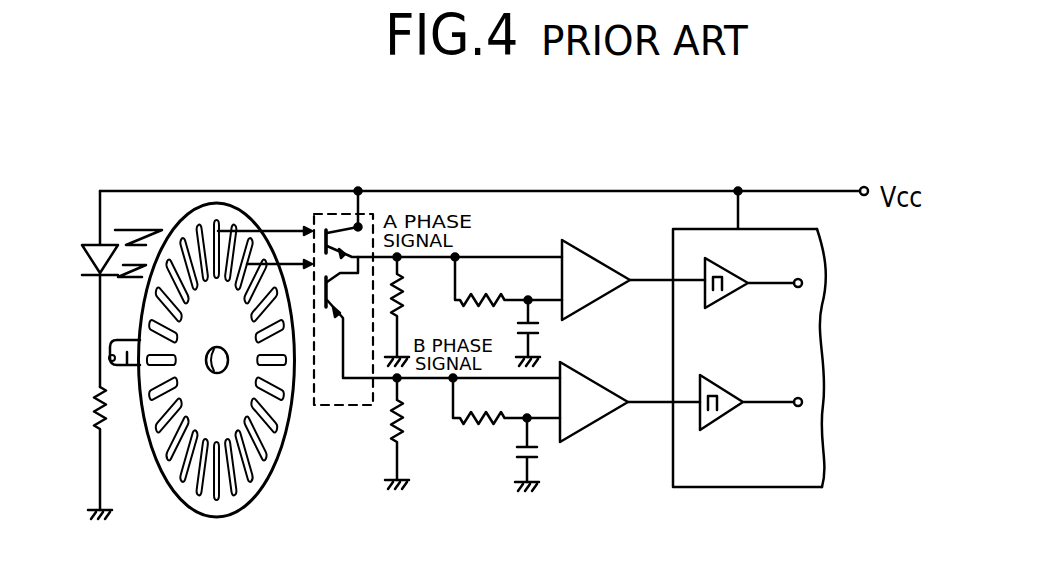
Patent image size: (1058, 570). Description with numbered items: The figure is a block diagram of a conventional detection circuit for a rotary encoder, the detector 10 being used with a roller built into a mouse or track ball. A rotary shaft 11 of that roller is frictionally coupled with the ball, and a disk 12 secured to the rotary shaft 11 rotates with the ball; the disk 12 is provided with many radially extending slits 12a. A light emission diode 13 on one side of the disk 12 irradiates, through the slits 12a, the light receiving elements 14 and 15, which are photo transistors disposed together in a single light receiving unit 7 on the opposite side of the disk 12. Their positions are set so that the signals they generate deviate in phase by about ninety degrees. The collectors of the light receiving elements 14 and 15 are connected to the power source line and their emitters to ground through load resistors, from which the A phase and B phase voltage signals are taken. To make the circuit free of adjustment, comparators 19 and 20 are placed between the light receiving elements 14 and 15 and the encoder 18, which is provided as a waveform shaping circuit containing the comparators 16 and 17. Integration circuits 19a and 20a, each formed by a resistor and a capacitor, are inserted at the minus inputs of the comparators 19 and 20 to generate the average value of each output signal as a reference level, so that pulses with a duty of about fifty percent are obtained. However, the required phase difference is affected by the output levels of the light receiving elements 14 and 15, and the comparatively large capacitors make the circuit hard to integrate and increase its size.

The detector 10 is at (534, 146).
The light emission diode 13 is at (100, 243).
The rotary shaft 11 is at (127, 366).
The disk 12 is at (224, 343).
The slits 12a is at (212, 245).
The light receiving unit 7 is at (345, 213).
The light receiving element 14 is at (335, 226).
The light receiving element 15 is at (338, 312).
The integration circuit 19a is at (512, 312).
The integration circuit 20a is at (508, 432).
The comparator 19 is at (598, 258).
The comparator 20 is at (607, 414).
The encoder 18 is at (746, 309).
The comparator 16 is at (724, 269).
The comparator 17 is at (720, 388).